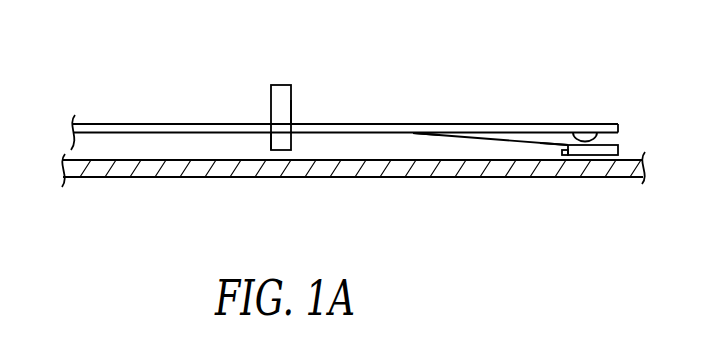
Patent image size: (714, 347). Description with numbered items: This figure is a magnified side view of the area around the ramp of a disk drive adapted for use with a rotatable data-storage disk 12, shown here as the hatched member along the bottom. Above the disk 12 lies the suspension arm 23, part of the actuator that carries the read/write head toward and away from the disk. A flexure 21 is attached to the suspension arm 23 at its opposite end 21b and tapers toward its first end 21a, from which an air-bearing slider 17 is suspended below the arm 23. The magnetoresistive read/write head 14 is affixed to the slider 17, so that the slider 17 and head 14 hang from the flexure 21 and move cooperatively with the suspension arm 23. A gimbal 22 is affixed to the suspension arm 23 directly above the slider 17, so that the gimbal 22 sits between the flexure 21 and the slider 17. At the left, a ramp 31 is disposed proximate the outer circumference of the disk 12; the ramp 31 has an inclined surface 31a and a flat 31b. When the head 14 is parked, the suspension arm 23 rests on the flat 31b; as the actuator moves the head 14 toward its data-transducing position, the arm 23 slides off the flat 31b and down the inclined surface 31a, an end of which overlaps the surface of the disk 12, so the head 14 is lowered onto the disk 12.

The data-storage disk 12 is at (172, 177).
The magnetoresistive read/write head 14 is at (568, 154).
The air-bearing slider 17 is at (620, 137).
The flexure 21 is at (498, 140).
The first end of the flexure 21a is at (552, 143).
The opposite end of the flexure 21b is at (413, 133).
The gimbal 22 is at (598, 136).
The suspension arm 23 is at (477, 124).
The ramp 31 is at (244, 98).
The inclined surface 31a is at (292, 110).
The flat 31b is at (279, 85).